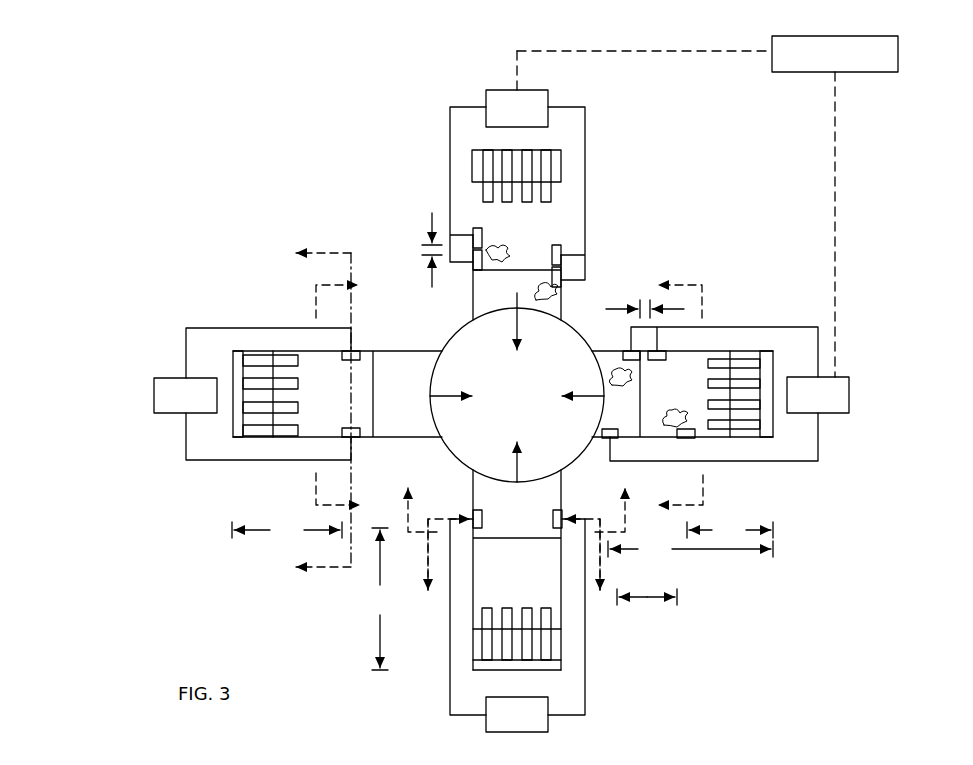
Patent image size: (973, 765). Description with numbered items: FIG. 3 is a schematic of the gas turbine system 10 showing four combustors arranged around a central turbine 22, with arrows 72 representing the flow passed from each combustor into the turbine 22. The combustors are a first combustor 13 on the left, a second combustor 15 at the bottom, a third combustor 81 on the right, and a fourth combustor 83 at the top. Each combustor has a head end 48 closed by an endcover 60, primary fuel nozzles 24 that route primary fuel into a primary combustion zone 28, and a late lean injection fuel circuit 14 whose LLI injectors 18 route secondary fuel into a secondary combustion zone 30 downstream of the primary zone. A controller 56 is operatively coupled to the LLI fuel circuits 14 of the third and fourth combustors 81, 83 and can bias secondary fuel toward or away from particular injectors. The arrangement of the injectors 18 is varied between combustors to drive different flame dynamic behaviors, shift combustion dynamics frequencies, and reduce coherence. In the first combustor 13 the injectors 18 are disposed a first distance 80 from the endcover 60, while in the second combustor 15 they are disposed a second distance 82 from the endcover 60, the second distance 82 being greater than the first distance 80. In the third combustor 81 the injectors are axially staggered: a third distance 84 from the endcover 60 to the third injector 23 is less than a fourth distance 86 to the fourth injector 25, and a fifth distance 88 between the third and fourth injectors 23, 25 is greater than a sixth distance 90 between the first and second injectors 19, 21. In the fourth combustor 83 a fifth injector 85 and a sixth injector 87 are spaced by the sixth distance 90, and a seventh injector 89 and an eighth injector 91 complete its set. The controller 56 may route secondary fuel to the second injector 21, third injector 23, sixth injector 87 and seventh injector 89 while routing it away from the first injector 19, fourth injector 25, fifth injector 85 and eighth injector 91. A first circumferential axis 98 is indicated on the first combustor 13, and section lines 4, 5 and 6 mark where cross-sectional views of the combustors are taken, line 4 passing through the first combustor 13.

The section line 4- 4 is at (338, 410).
The section line 5- 5 is at (516, 537).
The section line 6- 6 is at (678, 396).
The gas turbine system 10 is at (722, 648).
The first combustor 13 is at (207, 500).
The LLI fuel circuit 14 is at (536, 90).
The second combustor 15 is at (362, 714).
The LLI injectors 18 is at (356, 352).
The first injector 19 is at (657, 361).
The second injector 21 is at (632, 352).
The turbine 22 is at (529, 406).
The third injector 23 is at (692, 440).
The primary fuel nozzles 24 is at (298, 388).
The fourth injector 25 is at (612, 440).
The primary combustion zone 28 is at (336, 405).
The secondary combustion zone 30 is at (412, 426).
The head end 48 is at (490, 678).
The controller 56 is at (898, 55).
The endcover 60 is at (773, 364).
The flow direction arrows 72 is at (462, 394).
The first distance 80 is at (287, 530).
The third combustor 81 is at (882, 462).
The second distance 82 is at (380, 599).
The fourth combustor 83 is at (418, 160).
The third distance 84 is at (730, 530).
The fifth injector 85 is at (558, 245).
The fourth distance 86 is at (690, 549).
The sixth injector 87 is at (558, 287).
The fifth distance 88 is at (645, 602).
The seventh injector 89 is at (476, 228).
The sixth distance 90 is at (432, 220).
The eighth injector 91 is at (473, 263).
The first circumferential axis 98 is at (333, 567).